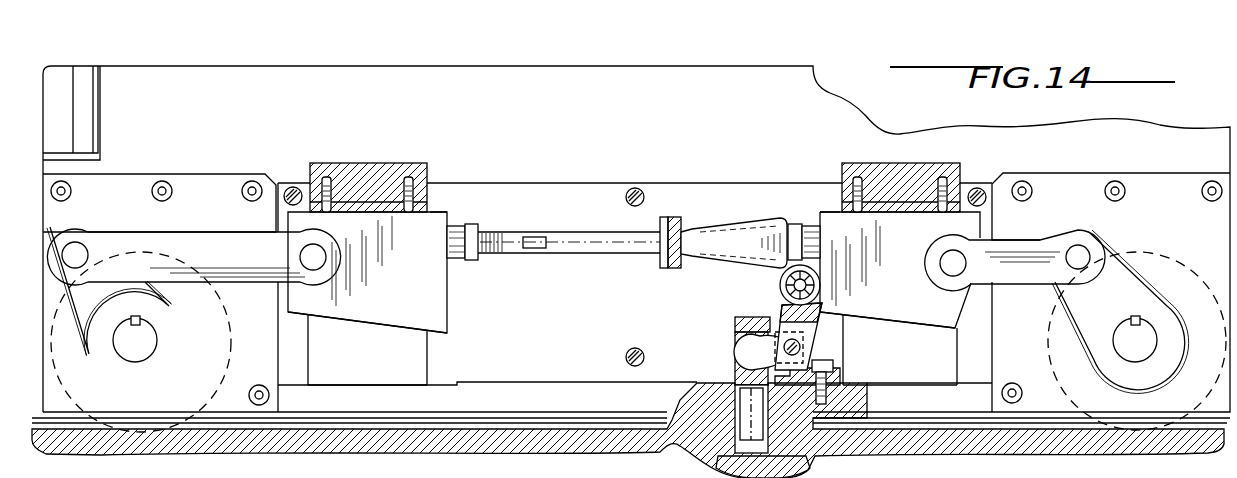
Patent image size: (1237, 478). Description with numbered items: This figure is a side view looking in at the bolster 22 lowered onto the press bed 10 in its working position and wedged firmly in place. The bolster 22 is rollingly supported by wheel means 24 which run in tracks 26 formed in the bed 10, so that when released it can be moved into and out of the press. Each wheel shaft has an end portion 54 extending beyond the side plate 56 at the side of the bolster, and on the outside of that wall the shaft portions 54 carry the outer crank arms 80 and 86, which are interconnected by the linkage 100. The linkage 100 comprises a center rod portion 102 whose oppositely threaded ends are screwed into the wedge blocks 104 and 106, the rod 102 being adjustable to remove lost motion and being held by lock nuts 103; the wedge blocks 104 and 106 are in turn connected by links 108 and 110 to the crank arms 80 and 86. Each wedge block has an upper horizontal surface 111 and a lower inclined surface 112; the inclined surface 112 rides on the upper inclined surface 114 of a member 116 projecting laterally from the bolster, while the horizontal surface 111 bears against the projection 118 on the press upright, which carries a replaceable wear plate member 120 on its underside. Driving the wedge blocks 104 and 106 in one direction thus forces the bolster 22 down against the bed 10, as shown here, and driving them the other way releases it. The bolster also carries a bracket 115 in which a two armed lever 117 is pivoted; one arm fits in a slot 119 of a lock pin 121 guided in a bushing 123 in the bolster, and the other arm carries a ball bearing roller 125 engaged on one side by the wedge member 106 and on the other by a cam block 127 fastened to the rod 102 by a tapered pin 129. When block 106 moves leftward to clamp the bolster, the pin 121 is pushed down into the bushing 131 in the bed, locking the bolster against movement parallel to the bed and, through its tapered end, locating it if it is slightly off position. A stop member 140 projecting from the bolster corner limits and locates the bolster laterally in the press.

The bed 10 is at (75, 457).
The bolster 22 is at (215, 75).
The wheel means 24 is at (152, 418).
The tracks 26 is at (590, 428).
The end portion of shaft 54 is at (124, 337).
The side plate 56 is at (204, 181).
The crank arm 80 is at (1138, 294).
The crank arm 86 is at (165, 313).
The linkage 100 is at (568, 232).
The center rod portion 102 is at (620, 255).
The lock nuts 103 is at (471, 262).
The wedge block 104 is at (440, 317).
The wedge block 106 is at (871, 278).
The link 108 is at (201, 236).
The link 110 is at (1007, 250).
The upper horizontal surface 111 is at (438, 211).
The lower inclined surface 112 is at (348, 318).
The upper inclined surface 114 is at (374, 325).
The bracket 115 is at (833, 368).
The member 116 is at (428, 354).
The two armed lever 117 is at (805, 333).
The projection 118 is at (368, 166).
The slot 119 is at (735, 340).
The wear plate member 120 is at (388, 213).
The lock pin 121 is at (733, 323).
The bushing 123 is at (732, 386).
The ball bearing roller 125 is at (780, 285).
The cam block 127 is at (721, 225).
The tapered pin 129 is at (668, 216).
The bushing 131 is at (782, 455).
The stop member 140 is at (68, 76).